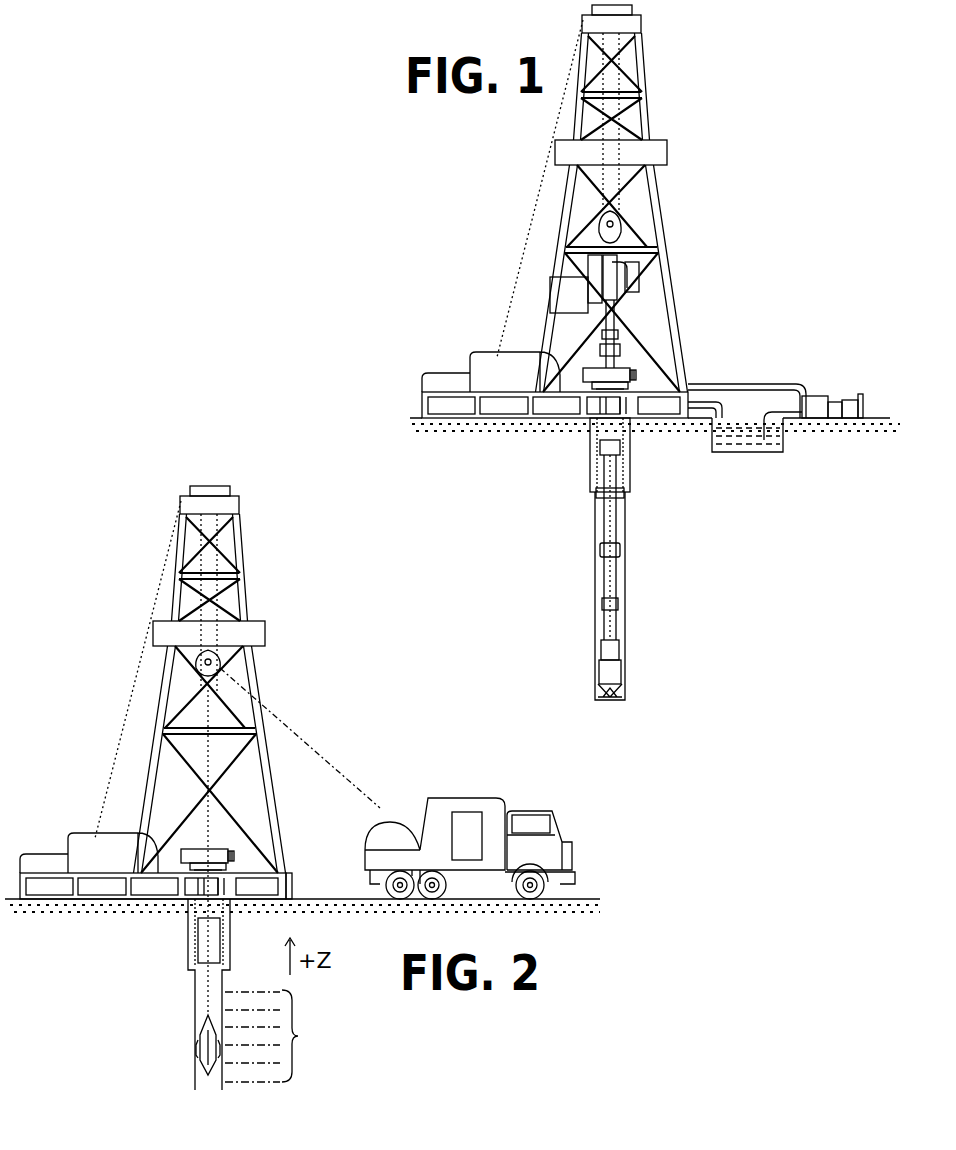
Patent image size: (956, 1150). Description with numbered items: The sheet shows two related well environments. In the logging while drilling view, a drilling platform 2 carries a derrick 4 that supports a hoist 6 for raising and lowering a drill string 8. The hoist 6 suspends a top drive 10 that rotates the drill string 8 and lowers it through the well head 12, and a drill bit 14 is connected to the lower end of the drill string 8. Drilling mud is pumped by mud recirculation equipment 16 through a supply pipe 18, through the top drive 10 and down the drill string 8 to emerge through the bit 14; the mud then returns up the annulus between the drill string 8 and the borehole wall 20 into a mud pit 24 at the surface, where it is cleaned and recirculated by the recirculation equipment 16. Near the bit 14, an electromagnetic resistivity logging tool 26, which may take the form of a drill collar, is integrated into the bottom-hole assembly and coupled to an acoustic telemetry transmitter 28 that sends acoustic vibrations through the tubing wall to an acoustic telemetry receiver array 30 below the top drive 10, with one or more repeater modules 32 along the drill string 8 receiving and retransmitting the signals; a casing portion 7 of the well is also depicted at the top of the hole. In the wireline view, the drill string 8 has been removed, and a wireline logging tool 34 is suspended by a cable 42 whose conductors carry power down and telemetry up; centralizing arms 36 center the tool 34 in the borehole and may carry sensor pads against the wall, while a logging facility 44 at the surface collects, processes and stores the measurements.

In FIG. 1, the drilling platform 2 is at (424, 392).
In FIG. 2, the drilling platform 2 is at (307, 870).
In FIG. 1, the derrick 4 is at (647, 121).
In FIG. 2, the derrick 4 is at (275, 843).
In FIG. 1, the hoist 6 is at (618, 228).
In FIG. 2, the hoist 6 is at (220, 665).
In FIG. 1, the casing 7 is at (600, 500).
In FIG. 1, the drill string 8 is at (614, 530).
In FIG. 1, the top drive 10 is at (612, 280).
In FIG. 1, the well head 12 is at (626, 370).
In FIG. 2, the well head 12 is at (228, 851).
In FIG. 1, the drill bit 14 is at (620, 692).
In FIG. 1, the mud recirculation equipment 16 is at (812, 400).
In FIG. 1, the supply pipe 18 is at (760, 385).
In FIG. 2, the supply pipe 18 is at (277, 1036).
In FIG. 1, the borehole wall 20 is at (624, 536).
In FIG. 1, the mud pit 24 is at (726, 445).
In FIG. 1, the resistivity logging tool 26 is at (604, 672).
In FIG. 1, the acoustic telemetry transmitter 28 is at (604, 648).
In FIG. 1, the acoustic telemetry receiver array 30 is at (616, 338).
In FIG. 1, the repeater module 32 is at (602, 556).
In FIG. 2, the wireline logging tool 34 is at (203, 1040).
In FIG. 2, the centralizing arms 36 is at (198, 1054).
In FIG. 2, the cable 42 is at (275, 724).
In FIG. 2, the logging facility 44 is at (432, 797).